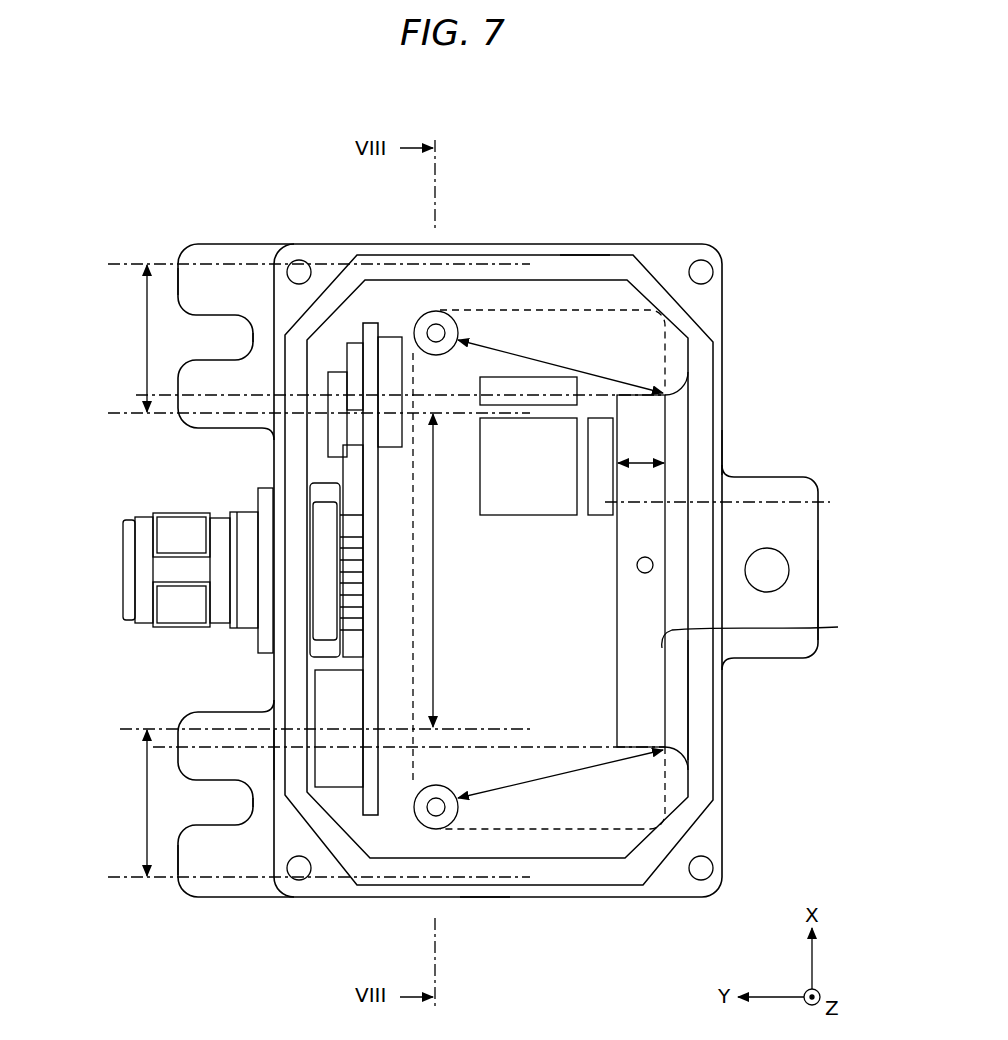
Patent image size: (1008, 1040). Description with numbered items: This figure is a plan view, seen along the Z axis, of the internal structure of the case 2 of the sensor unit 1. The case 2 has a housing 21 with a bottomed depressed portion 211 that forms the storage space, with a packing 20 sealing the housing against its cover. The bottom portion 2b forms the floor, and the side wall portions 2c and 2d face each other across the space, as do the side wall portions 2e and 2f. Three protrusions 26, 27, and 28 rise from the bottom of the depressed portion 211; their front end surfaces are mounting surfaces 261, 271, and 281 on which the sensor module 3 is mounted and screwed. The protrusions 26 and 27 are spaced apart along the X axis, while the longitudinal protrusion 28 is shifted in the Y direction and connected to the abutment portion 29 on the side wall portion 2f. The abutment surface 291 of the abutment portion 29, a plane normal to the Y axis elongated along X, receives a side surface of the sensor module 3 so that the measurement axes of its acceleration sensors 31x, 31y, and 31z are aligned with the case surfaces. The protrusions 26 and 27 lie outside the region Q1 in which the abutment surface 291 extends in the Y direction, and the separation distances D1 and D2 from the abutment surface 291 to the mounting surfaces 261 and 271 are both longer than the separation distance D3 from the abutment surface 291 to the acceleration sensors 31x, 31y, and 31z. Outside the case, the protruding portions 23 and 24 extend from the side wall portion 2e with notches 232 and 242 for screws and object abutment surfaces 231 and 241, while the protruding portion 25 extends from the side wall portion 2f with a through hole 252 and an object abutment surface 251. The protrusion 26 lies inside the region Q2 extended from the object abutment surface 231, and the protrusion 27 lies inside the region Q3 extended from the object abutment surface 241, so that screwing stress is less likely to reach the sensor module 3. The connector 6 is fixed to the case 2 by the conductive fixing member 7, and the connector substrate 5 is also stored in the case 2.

The sensor unit 1 is at (760, 148).
The case 2 is at (658, 242).
The bottom portion 2b is at (522, 337).
The side wall portion 2c is at (582, 252).
The side wall portion 2d is at (485, 893).
The side wall portion 2e is at (278, 755).
The side wall portion 2f is at (716, 455).
The packing 20 is at (707, 792).
The housing 21 is at (713, 288).
The depressed portion 211 is at (553, 860).
The protruding portion 23 is at (238, 253).
The object abutment surface 231 is at (177, 283).
The notch 232 is at (225, 330).
The protruding portion 24 is at (247, 888).
The object abutment surface 241 is at (177, 857).
The notch 242 is at (225, 803).
The protruding portion 25 is at (820, 535).
The object abutment surface 251 is at (818, 600).
The through hole 252 is at (768, 572).
The protrusion 26 is at (443, 305).
The mounting surface 261 is at (430, 312).
The protrusion 27 is at (441, 834).
The mounting surface 271 is at (420, 825).
The protrusion 28 is at (639, 755).
The mounting surface 281 is at (650, 420).
The abutment portion 29 is at (675, 708).
The abutment surface 291 is at (770, 638).
The sensor module 3 is at (588, 800).
The acceleration sensor 31x is at (548, 383).
The acceleration sensor 31y is at (603, 427).
The acceleration sensor 31z is at (518, 495).
The connector substrate 5 is at (368, 818).
The connector 6 is at (121, 566).
The fixing member 7 is at (265, 597).
The region Q1 is at (838, 495).
The region Q2 is at (316, 338).
The region Q3 is at (316, 803).
The separation distance D1 is at (490, 337).
The separation distance D2 is at (518, 785).
The separation distance D3 is at (641, 458).